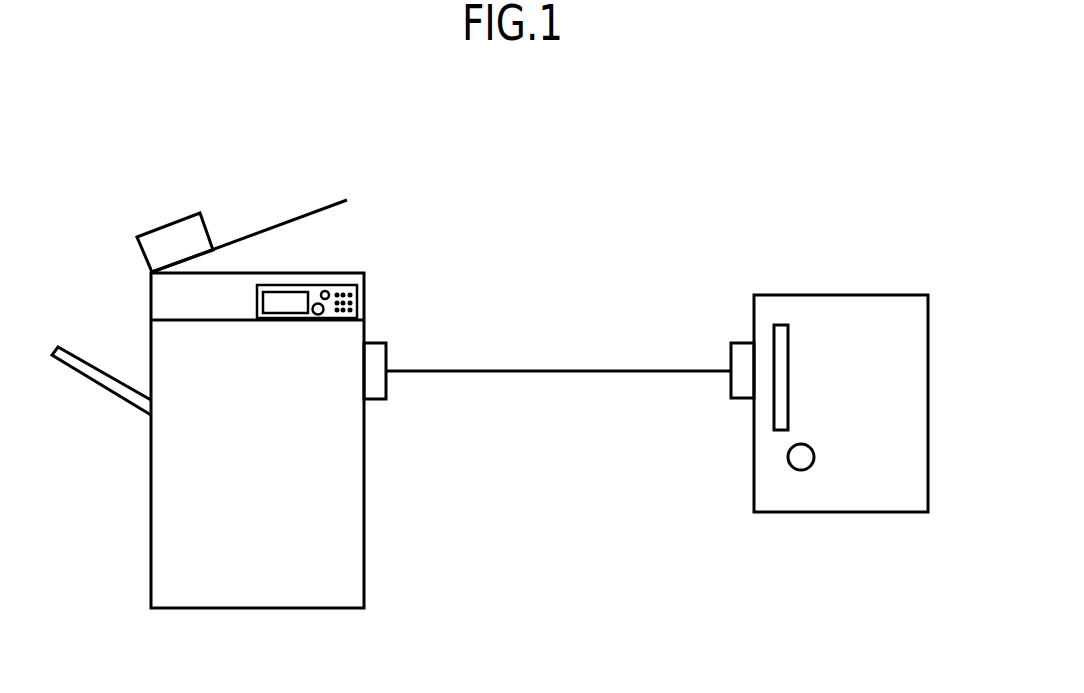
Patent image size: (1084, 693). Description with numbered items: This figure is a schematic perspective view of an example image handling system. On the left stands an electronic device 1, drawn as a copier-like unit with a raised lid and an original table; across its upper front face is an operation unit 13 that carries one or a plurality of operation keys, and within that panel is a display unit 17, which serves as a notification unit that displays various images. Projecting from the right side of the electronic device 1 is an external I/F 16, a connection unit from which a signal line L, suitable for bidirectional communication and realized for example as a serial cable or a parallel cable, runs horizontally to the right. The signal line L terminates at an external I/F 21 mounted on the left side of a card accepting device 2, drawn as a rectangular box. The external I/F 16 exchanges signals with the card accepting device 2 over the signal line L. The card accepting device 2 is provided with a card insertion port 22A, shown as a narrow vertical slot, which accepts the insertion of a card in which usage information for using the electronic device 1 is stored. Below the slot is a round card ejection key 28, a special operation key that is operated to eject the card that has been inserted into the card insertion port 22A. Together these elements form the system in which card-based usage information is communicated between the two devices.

The electronic device 1 is at (252, 353).
The operation unit 13 is at (355, 266).
The display unit 17 is at (287, 295).
The external I/F 16 is at (373, 343).
The signal line L is at (565, 372).
The card accepting device 2 is at (814, 394).
The external I/F 21 is at (742, 343).
The card insertion port 22A is at (780, 323).
The card ejection key 28 is at (801, 470).